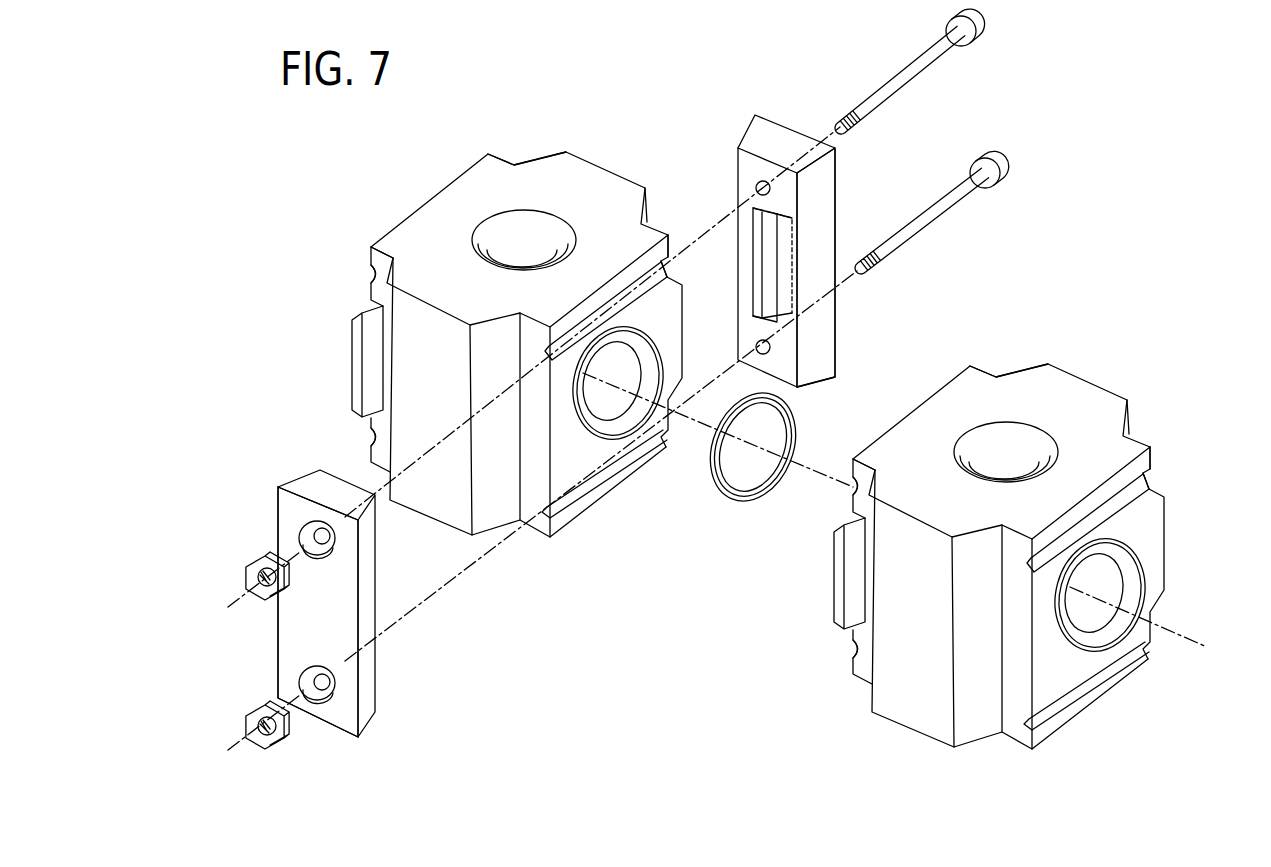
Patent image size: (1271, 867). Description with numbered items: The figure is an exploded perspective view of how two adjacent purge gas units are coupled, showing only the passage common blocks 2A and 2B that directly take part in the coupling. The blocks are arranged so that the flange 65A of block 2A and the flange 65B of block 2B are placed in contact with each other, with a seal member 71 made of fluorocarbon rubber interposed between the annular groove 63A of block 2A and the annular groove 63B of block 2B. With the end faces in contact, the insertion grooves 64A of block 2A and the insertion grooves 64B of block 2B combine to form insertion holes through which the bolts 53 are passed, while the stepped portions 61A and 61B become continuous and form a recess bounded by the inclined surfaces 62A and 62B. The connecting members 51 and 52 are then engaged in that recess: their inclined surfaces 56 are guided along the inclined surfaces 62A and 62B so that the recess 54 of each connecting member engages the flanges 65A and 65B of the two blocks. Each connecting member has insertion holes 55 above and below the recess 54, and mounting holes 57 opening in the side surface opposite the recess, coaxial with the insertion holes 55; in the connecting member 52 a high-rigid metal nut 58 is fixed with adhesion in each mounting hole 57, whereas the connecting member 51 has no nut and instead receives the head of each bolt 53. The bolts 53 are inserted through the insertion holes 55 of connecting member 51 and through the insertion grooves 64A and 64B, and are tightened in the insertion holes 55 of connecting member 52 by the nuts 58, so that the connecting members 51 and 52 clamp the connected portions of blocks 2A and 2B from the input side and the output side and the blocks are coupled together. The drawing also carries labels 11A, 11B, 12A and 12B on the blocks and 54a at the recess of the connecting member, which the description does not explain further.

The passage common block 2A is at (460, 290).
The passage common block 2B is at (942, 500).
The flow passage port of first block 11A is at (628, 372).
The flow passage port of second block 11B is at (1108, 580).
The top port of first block 12A is at (515, 250).
The top port of second block 12B is at (997, 462).
The connecting member 51 is at (764, 133).
The connecting member 52 is at (318, 483).
The bolt 53 is at (892, 78).
The recess 54 is at (770, 290).
The inner face of slot 54a is at (758, 238).
The insertion hole 55 is at (757, 186).
The inclined surface 56 is at (750, 140).
The mounting hole 57 is at (307, 530).
The nut 58 is at (247, 572).
The stepped portion 61A is at (506, 158).
The stepped portion 61B is at (985, 370).
The inclined surface 62A is at (527, 158).
The inclined surface 62B is at (1008, 370).
The annular groove 63A is at (655, 352).
The annular groove 63B is at (1137, 567).
The insertion groove 64A is at (666, 268).
The insertion groove 64B is at (853, 492).
The flange 65A is at (355, 358).
The flange 65B is at (836, 572).
The seal member 71 is at (722, 490).